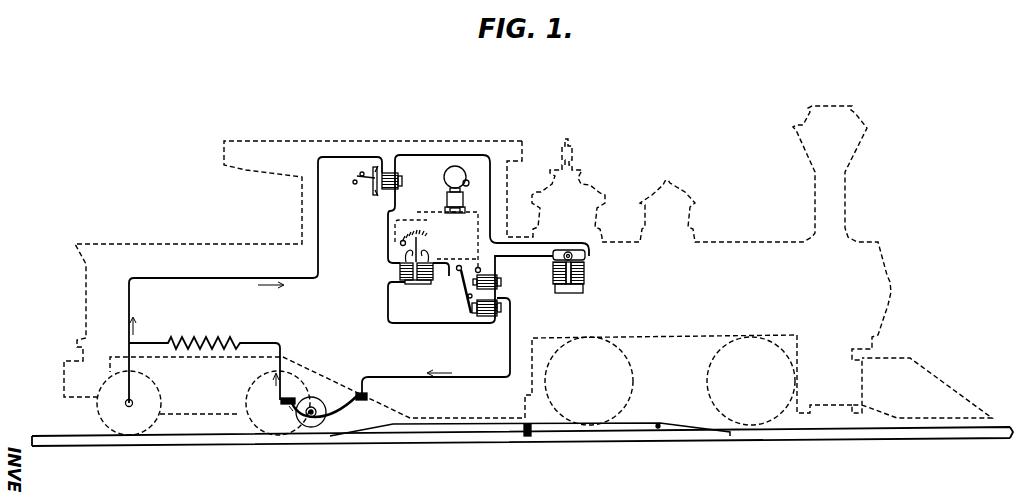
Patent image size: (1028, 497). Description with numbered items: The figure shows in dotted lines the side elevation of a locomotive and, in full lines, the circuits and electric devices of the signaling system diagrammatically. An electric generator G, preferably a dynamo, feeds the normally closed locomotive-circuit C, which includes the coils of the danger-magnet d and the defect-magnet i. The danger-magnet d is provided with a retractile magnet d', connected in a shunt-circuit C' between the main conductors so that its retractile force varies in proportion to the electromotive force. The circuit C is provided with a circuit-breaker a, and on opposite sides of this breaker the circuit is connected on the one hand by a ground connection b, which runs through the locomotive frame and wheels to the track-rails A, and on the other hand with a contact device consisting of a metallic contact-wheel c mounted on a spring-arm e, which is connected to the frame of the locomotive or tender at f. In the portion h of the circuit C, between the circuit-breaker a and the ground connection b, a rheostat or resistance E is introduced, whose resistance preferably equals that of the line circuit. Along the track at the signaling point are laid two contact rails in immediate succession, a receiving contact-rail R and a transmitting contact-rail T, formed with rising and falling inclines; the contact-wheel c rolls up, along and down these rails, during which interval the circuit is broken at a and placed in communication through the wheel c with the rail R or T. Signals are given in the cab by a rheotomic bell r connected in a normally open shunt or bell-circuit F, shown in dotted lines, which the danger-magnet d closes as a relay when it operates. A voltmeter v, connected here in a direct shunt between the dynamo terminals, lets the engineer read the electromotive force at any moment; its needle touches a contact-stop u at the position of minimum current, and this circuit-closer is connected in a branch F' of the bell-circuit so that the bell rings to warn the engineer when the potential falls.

The track-rails A is at (107, 444).
The receiving contact-rail R is at (468, 436).
The transmitting contact-rail T is at (631, 437).
The normally closed locomotive-circuit C is at (359, 279).
The shunt-circuit C' is at (459, 283).
The rheostat or resistance E is at (204, 361).
The bell-circuit F is at (452, 219).
The branch of the bell-circuit F' is at (436, 241).
The electric generator G is at (576, 271).
The circuit-breaker a is at (284, 388).
The ground connection b is at (118, 396).
The contact-wheel c is at (311, 405).
The danger-magnet d is at (485, 290).
The retractile magnet d' is at (499, 309).
The spring-arm e is at (323, 408).
The connection point on frame f is at (433, 352).
The portion of the normally closed circuit h is at (266, 335).
The defect-magnet i is at (377, 185).
The electric bell r is at (436, 186).
The contact-stop u is at (396, 250).
The voltmeter v is at (424, 280).